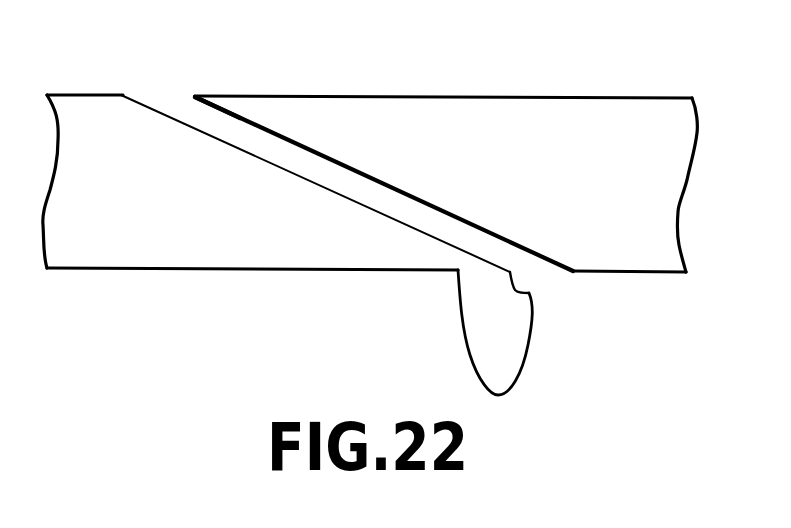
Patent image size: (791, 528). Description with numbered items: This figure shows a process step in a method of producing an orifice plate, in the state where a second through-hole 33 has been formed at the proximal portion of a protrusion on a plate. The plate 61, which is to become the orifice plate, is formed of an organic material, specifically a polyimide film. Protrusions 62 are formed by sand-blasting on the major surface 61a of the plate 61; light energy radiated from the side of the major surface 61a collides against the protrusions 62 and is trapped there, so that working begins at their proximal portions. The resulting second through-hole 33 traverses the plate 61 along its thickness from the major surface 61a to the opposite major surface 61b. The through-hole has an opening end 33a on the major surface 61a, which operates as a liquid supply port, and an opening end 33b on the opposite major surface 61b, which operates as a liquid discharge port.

The second through-hole 33 is at (370, 183).
The opening end 33a is at (513, 278).
The opening end 33b is at (195, 97).
The plate 61 is at (650, 198).
The major surface 61a is at (652, 273).
The opposite major surface 61b is at (663, 97).
The protrusions 62 is at (503, 310).